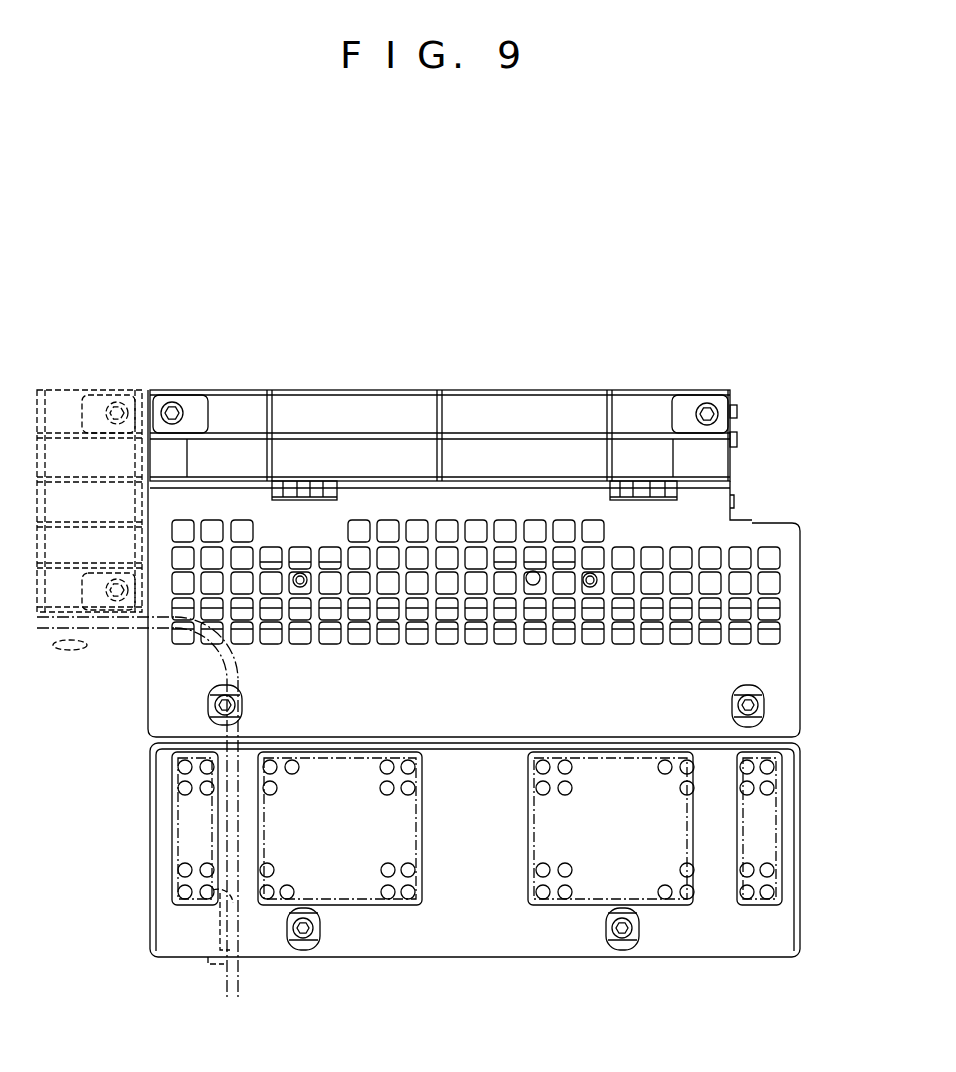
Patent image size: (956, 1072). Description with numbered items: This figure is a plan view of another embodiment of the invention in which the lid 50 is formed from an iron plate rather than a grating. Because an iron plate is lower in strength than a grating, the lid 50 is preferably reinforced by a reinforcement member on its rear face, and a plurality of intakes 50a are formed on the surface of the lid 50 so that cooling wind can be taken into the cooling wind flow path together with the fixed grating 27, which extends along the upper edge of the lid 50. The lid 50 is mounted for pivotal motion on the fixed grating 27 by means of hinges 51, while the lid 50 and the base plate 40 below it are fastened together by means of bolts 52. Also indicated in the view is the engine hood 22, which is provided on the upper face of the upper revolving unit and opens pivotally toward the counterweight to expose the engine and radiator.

The fixed grating 27 is at (490, 390).
The hinge 51 is at (303, 478).
The lid 50 is at (803, 592).
The intake 50a is at (710, 556).
The bolt 52 is at (210, 708).
The base plate 40 is at (792, 855).
The engine hood 22 is at (240, 986).